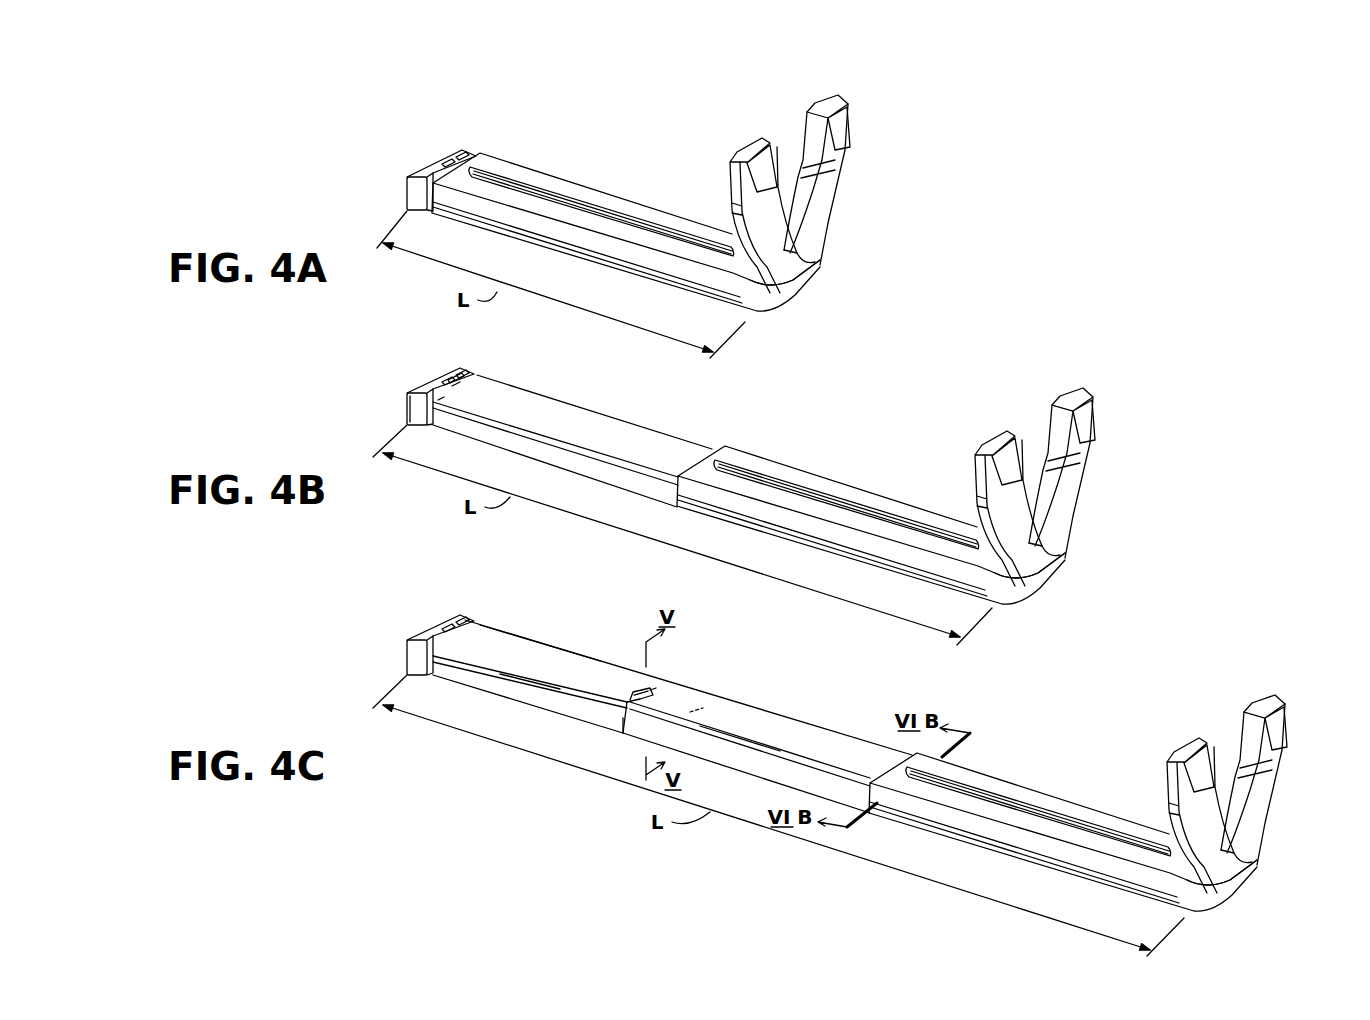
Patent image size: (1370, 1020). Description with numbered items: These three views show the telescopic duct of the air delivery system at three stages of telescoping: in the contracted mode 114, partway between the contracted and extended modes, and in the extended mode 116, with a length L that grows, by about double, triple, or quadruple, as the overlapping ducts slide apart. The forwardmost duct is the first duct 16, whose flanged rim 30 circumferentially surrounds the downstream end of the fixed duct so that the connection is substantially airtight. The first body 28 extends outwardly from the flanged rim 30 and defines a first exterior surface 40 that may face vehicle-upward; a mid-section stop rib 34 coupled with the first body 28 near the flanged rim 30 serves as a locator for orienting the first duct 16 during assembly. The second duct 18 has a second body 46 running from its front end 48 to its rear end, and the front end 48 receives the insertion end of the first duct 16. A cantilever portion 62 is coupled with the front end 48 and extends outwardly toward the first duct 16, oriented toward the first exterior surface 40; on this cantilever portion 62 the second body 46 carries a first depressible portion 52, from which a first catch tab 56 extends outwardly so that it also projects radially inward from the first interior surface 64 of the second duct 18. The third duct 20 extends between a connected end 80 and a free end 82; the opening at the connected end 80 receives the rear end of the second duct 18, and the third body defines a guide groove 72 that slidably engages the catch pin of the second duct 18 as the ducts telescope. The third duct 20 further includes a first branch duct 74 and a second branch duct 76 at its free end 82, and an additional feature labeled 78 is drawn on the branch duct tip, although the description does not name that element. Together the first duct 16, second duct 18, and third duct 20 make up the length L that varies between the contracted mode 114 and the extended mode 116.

In FIG. 4C, the first duct 16 is at (556, 647).
In FIG. 4B, the second duct 18 is at (600, 404).
In FIG. 4C, the second duct 18 is at (795, 720).
In FIG. 4A, the third duct 20 is at (620, 199).
In FIG. 4B, the third duct 20 is at (871, 512).
In FIG. 4C, the third duct 20 is at (1063, 819).
In FIG. 4C, the first body 28 is at (495, 650).
In FIG. 4A, the flanged rim 30 is at (455, 160).
In FIG. 4B, the flanged rim 30 is at (455, 378).
In FIG. 4C, the flanged rim 30 is at (458, 620).
In FIG. 4B, the mid-section stop rib 34 is at (427, 390).
In FIG. 4C, the first exterior surface 40 is at (551, 675).
In FIG. 4C, the second body 46 is at (748, 716).
In FIG. 4B, the front end 48 is at (408, 410).
In FIG. 4C, the front end 48 is at (623, 718).
In FIG. 4B, the first depressible portion 52 is at (440, 405).
In FIG. 4C, the first depressible portion 52 is at (652, 688).
In FIG. 4B, the first catch tab 56 is at (456, 384).
In FIG. 4C, the first catch tab 56 is at (645, 702).
In FIG. 4B, the cantilever portion 62 is at (455, 373).
In FIG. 4C, the cantilever portion 62 is at (633, 690).
In FIG. 4C, the first interior surface 64 is at (700, 710).
In FIG. 4A, the guide groove 72 is at (810, 204).
In FIG. 4B, the guide groove 72 is at (1057, 491).
In FIG. 4C, the guide groove 72 is at (1248, 800).
In FIG. 4A, the first branch duct 74 is at (797, 258).
In FIG. 4B, the first branch duct 74 is at (1053, 584).
In FIG. 4C, the first branch duct 74 is at (1244, 892).
In FIG. 4A, the second branch duct 76 is at (830, 216).
In FIG. 4B, the second branch duct 76 is at (1086, 493).
In FIG. 4C, the second branch duct 76 is at (1277, 799).
In FIG. 4A, the tine tip 78 is at (850, 112).
In FIG. 4B, the tine tip 78 is at (1095, 385).
In FIG. 4C, the tine tip 78 is at (1286, 694).
In FIG. 4A, the connected end 80 is at (470, 160).
In FIG. 4B, the connected end 80 is at (841, 473).
In FIG. 4C, the connected end 80 is at (1017, 766).
In FIG. 4A, the free end 82 is at (808, 136).
In FIG. 4B, the free end 82 is at (1036, 438).
In FIG. 4C, the free end 82 is at (1225, 745).
In FIG. 4A, the contracted mode 114 is at (677, 172).
In FIG. 4C, the extended mode 116 is at (1100, 787).